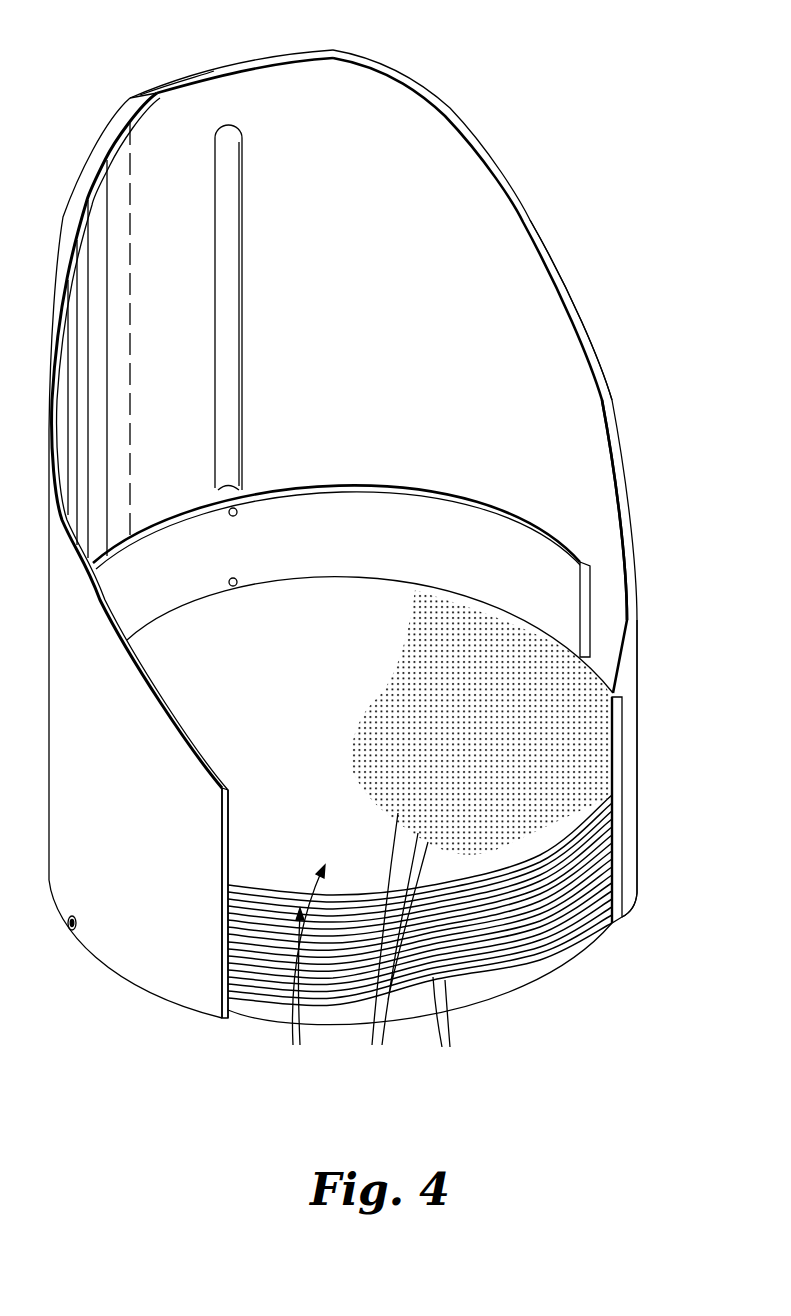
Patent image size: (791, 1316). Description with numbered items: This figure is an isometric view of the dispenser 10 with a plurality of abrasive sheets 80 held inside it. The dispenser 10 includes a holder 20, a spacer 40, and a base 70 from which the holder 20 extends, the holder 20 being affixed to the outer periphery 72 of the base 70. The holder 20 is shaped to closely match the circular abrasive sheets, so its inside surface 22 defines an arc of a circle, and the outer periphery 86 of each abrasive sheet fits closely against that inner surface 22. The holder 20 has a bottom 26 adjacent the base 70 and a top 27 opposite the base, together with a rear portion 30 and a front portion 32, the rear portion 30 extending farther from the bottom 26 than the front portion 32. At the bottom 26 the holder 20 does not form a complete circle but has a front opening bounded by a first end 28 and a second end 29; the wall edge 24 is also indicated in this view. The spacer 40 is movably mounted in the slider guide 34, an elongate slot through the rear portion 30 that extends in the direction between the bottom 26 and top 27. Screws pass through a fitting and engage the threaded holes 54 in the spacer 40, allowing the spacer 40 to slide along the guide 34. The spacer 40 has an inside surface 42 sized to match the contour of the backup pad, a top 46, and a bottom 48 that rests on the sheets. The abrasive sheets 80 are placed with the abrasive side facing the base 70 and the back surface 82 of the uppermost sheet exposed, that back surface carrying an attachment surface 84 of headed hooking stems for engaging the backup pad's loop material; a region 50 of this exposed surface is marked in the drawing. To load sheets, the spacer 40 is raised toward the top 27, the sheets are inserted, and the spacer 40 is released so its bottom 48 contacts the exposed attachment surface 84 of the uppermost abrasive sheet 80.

The dispenser 10 is at (458, 57).
The holder 20 is at (534, 206).
The inside surface 22 is at (561, 322).
The housing wall edge 24 is at (636, 808).
The bottom 26 is at (633, 909).
The top 27 is at (214, 68).
The first end 28 is at (622, 852).
The second end 29 is at (230, 1003).
The rear portion 30 is at (338, 90).
The front portion 32 is at (623, 572).
The slider guide 34 is at (244, 150).
The spacer 40 is at (351, 537).
The inside surface 42 is at (455, 515).
The top 46 is at (362, 484).
The bottom 48 is at (341, 586).
The floor surface region 50 is at (585, 712).
The threaded holes 54 is at (238, 580).
The base 70 is at (442, 938).
The outer periphery 72 is at (483, 997).
The abrasive sheets 80 is at (303, 971).
The back surface 82 is at (222, 712).
The attachment surface 84 is at (393, 947).
The outer periphery 86 is at (446, 1029).